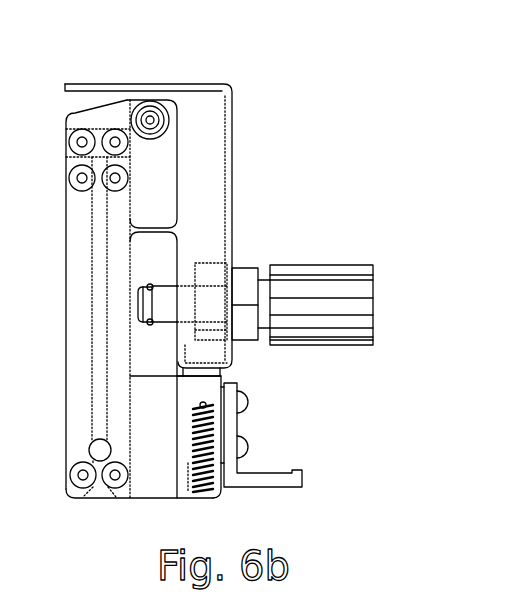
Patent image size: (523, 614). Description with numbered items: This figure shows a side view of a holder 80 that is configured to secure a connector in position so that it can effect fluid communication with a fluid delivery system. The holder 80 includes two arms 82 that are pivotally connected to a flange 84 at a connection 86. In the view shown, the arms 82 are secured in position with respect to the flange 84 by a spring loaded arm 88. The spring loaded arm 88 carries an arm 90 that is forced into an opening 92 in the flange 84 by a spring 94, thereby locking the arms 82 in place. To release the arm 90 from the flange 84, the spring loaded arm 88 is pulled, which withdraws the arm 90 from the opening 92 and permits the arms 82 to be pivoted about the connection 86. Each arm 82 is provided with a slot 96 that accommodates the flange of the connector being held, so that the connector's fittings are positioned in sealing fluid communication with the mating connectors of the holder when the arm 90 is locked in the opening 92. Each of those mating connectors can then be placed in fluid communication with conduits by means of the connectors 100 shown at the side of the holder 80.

The holder 80 is at (252, 216).
The arms 82 is at (63, 307).
The flange 84 is at (208, 153).
The connection 86 is at (150, 116).
The spring loaded arm 88 is at (265, 473).
The arm 90 is at (188, 358).
The opening 92 is at (230, 366).
The spring 94 is at (195, 441).
The slots 96 is at (92, 252).
The connectors 100 is at (290, 268).